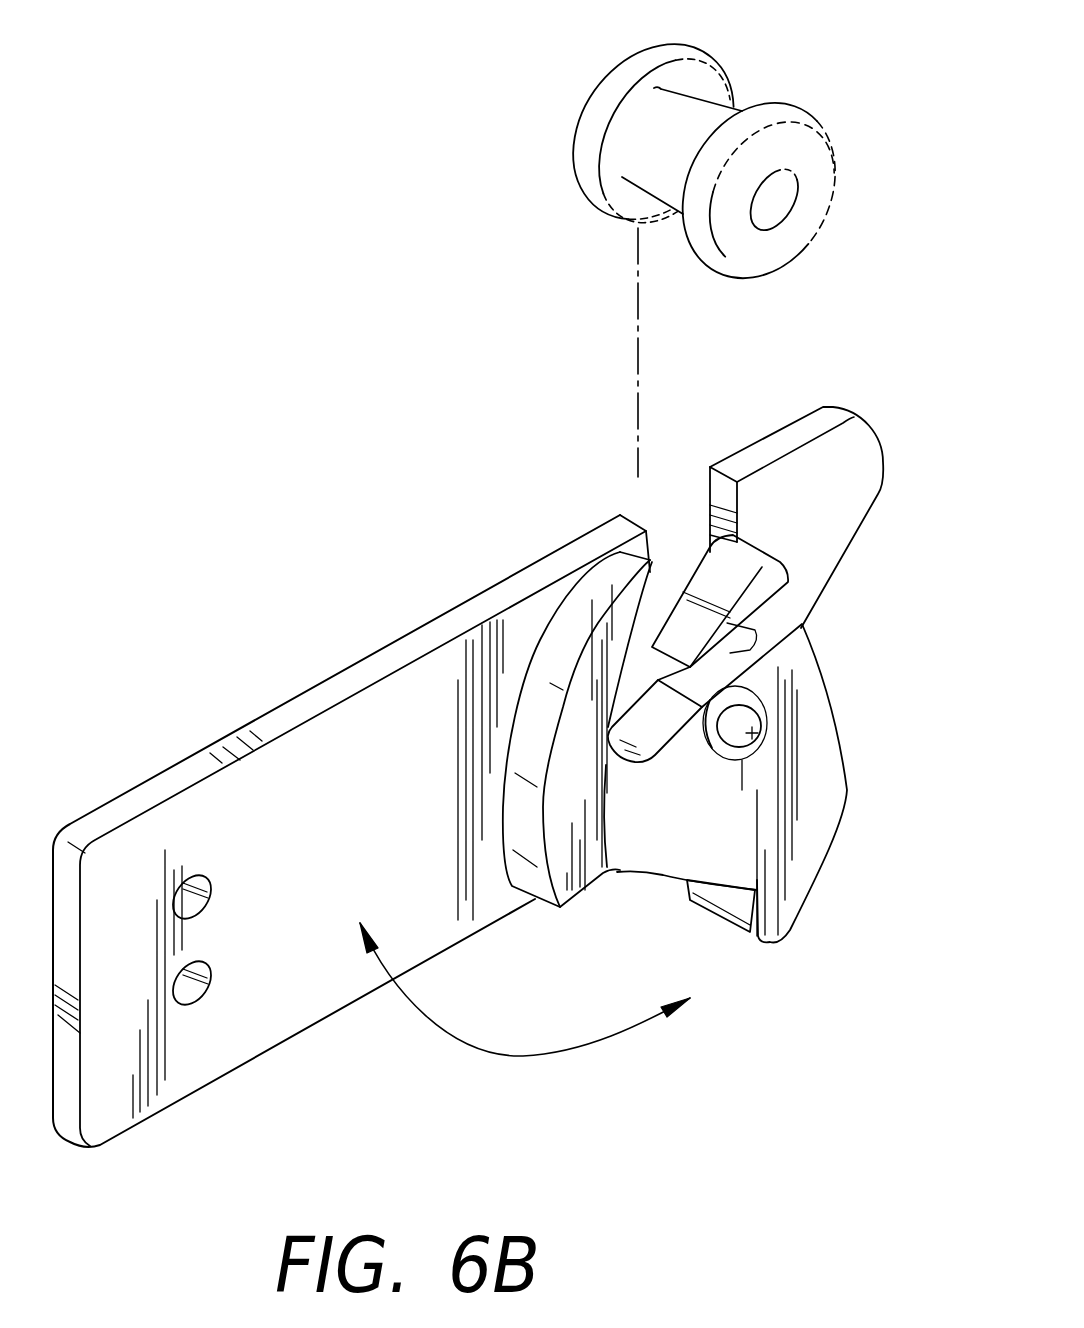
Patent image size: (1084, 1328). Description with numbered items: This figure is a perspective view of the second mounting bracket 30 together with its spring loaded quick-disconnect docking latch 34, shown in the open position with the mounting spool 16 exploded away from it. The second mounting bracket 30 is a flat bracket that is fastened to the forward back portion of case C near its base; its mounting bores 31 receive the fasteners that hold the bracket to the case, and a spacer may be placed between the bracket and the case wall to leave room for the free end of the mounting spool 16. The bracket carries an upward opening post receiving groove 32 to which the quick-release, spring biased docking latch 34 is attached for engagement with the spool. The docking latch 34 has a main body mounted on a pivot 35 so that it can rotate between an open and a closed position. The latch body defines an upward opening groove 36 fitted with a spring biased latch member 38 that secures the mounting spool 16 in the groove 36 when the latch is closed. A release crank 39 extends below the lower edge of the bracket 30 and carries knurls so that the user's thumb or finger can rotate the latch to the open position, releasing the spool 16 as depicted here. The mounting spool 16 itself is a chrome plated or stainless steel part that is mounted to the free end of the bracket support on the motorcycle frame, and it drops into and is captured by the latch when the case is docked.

The mounting spool 16 is at (589, 112).
The second mounting bracket 30 is at (362, 666).
The mounting bores 31 is at (200, 900).
The upward opening post receiving groove 32 is at (727, 493).
The docking latch 34 is at (673, 865).
The pivot 35 is at (762, 718).
The upward opening groove 36 is at (615, 870).
The spring biased latch member 38 is at (783, 570).
The release crank 39 is at (737, 933).